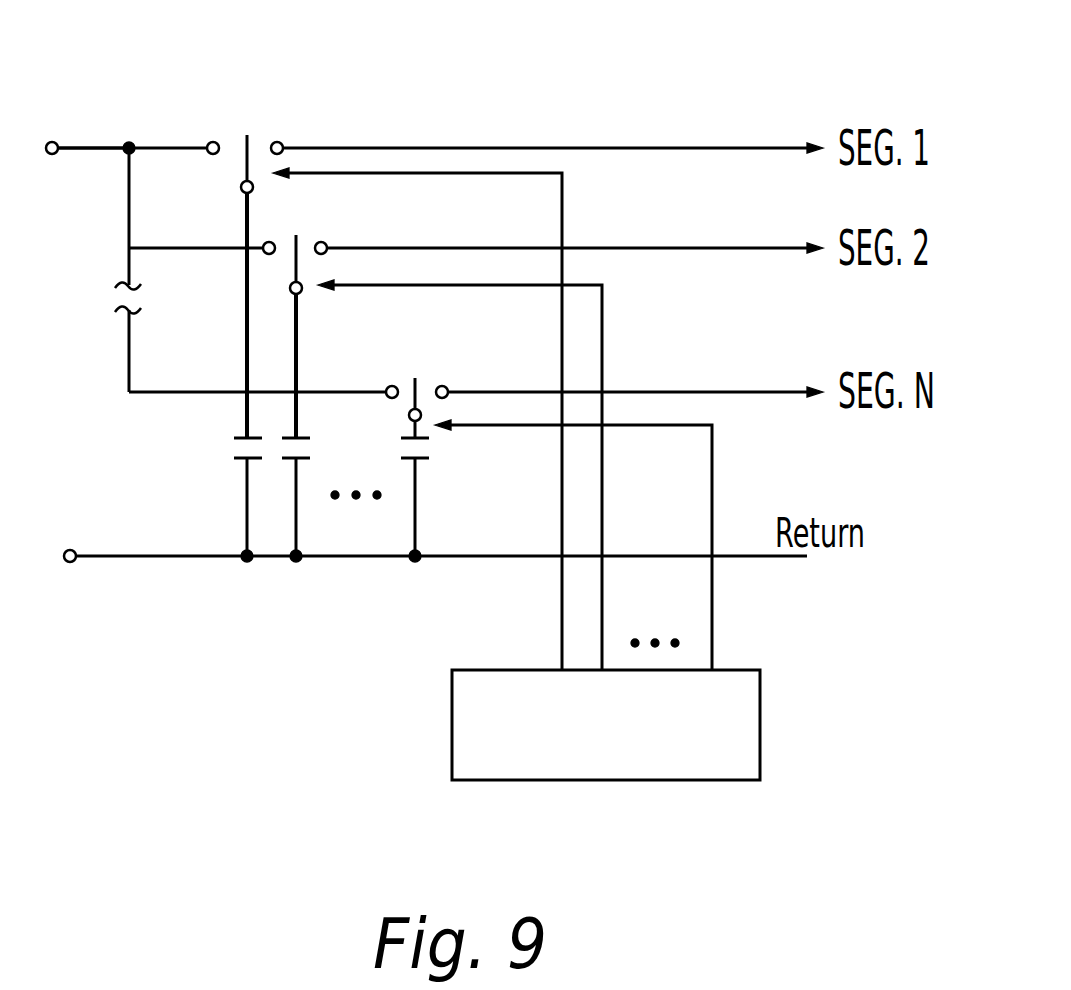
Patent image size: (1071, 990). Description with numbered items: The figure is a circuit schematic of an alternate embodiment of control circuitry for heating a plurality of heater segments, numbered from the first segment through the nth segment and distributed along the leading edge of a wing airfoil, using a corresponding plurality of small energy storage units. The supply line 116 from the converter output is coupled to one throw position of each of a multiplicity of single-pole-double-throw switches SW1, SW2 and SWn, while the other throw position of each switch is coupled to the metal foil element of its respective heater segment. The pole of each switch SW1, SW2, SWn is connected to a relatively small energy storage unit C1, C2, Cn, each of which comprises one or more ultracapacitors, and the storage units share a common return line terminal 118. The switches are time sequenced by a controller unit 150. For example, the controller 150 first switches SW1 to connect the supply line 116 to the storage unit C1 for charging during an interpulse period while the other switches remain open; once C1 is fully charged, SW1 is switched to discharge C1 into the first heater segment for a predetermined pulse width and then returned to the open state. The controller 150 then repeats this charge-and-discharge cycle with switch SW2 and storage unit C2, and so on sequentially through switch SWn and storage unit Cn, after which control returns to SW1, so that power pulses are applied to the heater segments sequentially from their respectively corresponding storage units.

The supply line 116 is at (110, 148).
The return line terminal 118 is at (118, 556).
The controller unit 150 is at (760, 690).
The single-pole-double-throw switch SW1 is at (240, 142).
The single-pole-double-throw switch SW2 is at (292, 250).
The single-pole-double-throw switch SWn is at (425, 382).
The energy storage unit C1 is at (230, 450).
The energy storage unit C2 is at (307, 448).
The energy storage unit Cn is at (428, 442).